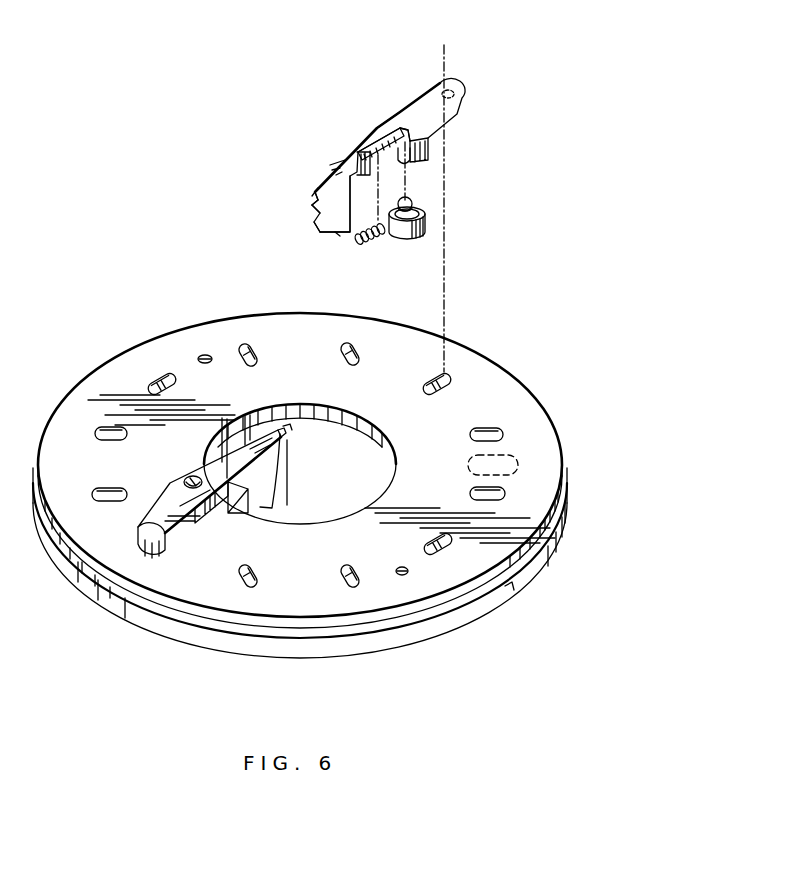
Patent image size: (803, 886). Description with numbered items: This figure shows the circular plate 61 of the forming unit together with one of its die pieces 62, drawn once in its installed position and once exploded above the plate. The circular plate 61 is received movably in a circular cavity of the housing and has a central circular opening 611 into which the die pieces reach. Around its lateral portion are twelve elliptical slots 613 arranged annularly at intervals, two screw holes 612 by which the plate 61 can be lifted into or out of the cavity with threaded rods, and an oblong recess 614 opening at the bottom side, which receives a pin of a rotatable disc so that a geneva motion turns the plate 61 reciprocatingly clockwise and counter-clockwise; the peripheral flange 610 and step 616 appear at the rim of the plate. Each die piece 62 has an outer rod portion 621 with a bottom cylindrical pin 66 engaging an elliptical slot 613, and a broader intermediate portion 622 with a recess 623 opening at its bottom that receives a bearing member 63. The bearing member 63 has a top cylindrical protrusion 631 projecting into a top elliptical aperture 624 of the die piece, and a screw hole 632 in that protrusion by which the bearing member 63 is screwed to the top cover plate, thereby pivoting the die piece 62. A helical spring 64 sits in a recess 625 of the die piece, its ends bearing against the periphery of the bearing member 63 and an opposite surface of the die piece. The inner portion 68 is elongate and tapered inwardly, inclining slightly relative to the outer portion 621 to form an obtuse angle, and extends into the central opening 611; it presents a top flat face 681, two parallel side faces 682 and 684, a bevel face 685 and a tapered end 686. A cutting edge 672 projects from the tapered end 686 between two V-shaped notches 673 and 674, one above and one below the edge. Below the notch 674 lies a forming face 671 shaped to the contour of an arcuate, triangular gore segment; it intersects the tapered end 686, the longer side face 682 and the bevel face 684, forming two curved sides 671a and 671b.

The circular plate 61 is at (165, 632).
The peripheral flange 610 is at (483, 612).
The central circular opening 611 is at (355, 452).
The screw holes 612 is at (205, 352).
The elliptical slots 613 is at (158, 372).
The oblong recess 614 is at (515, 465).
The step 616 is at (512, 586).
The die piece 62 is at (172, 483).
The outer rod portion 621 is at (140, 525).
The intermediate portion 622 is at (380, 118).
The recess 623 is at (412, 150).
The top elliptical aperture 624 is at (410, 128).
The recess 625 is at (367, 150).
The bearing member 63 is at (415, 240).
The top cylindrical protrusion 631 is at (426, 216).
The screw hole 632 is at (410, 204).
The helical spring 64 is at (375, 234).
The bottom cylindrical pin 66 is at (455, 95).
The inner portion 68 is at (250, 512).
The forming face 671 is at (325, 236).
The curved side 671a is at (338, 236).
The curved side 671b is at (320, 228).
The cutting edge 672 is at (312, 198).
The V-shaped notch 673 is at (314, 193).
The V-shaped notch 674 is at (313, 210).
The top flat face 681 is at (232, 455).
The side face 682 is at (248, 433).
The side face 684 is at (247, 477).
The bevel face 685 is at (288, 440).
The tapered end 686 is at (283, 428).